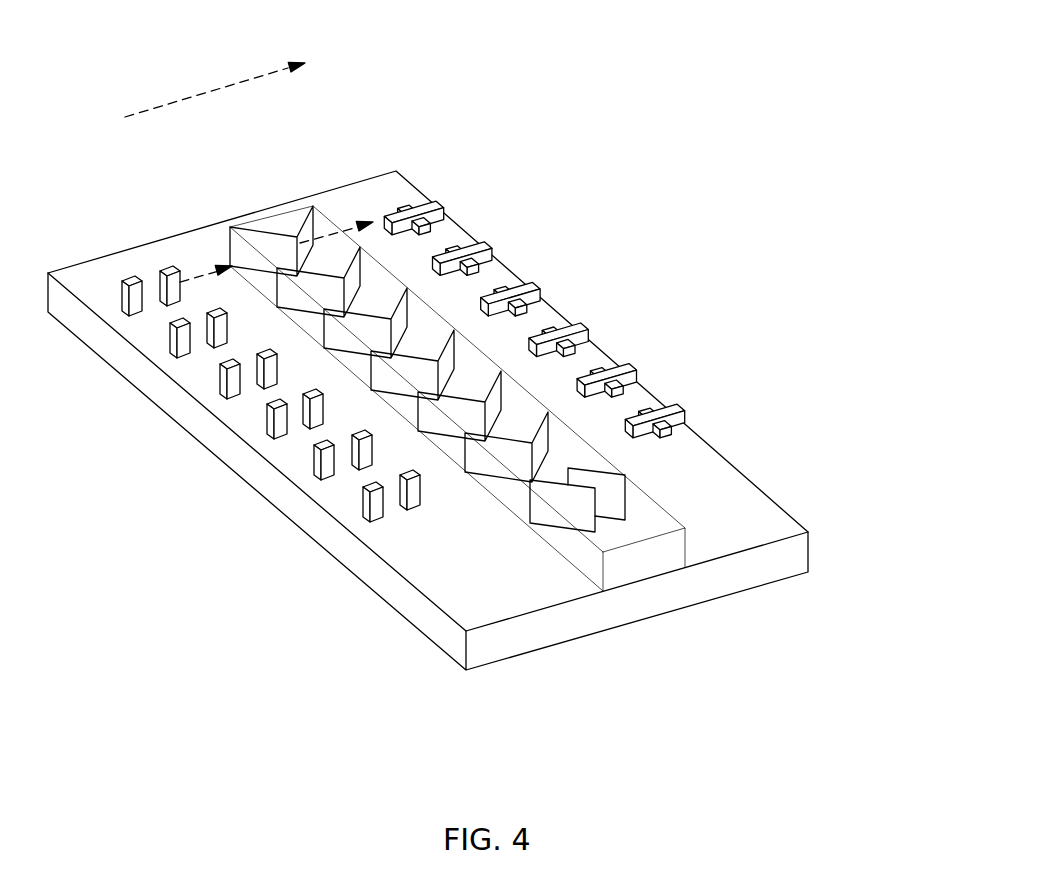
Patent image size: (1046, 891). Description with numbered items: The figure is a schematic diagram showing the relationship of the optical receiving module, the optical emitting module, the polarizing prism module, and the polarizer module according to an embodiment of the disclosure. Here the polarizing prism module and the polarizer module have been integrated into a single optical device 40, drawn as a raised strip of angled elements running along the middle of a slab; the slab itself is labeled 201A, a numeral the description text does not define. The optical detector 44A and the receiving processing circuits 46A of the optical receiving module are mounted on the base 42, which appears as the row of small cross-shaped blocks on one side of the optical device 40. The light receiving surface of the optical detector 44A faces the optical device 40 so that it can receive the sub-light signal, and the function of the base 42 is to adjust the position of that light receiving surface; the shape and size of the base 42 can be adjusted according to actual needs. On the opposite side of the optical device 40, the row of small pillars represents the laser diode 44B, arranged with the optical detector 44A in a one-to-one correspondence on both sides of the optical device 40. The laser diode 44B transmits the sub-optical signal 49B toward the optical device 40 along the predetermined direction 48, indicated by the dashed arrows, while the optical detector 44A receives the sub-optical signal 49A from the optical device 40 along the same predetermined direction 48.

The predetermined direction 48 is at (177, 102).
The base 42 is at (415, 207).
The receiving processing circuits 46A is at (430, 207).
The optical detector 44A is at (397, 203).
The laser diode 44B is at (168, 268).
The sub-optical signal 49A is at (340, 242).
The sub-optical signal 49B is at (205, 287).
The optical device 40 is at (663, 510).
The substrate 201A is at (787, 512).